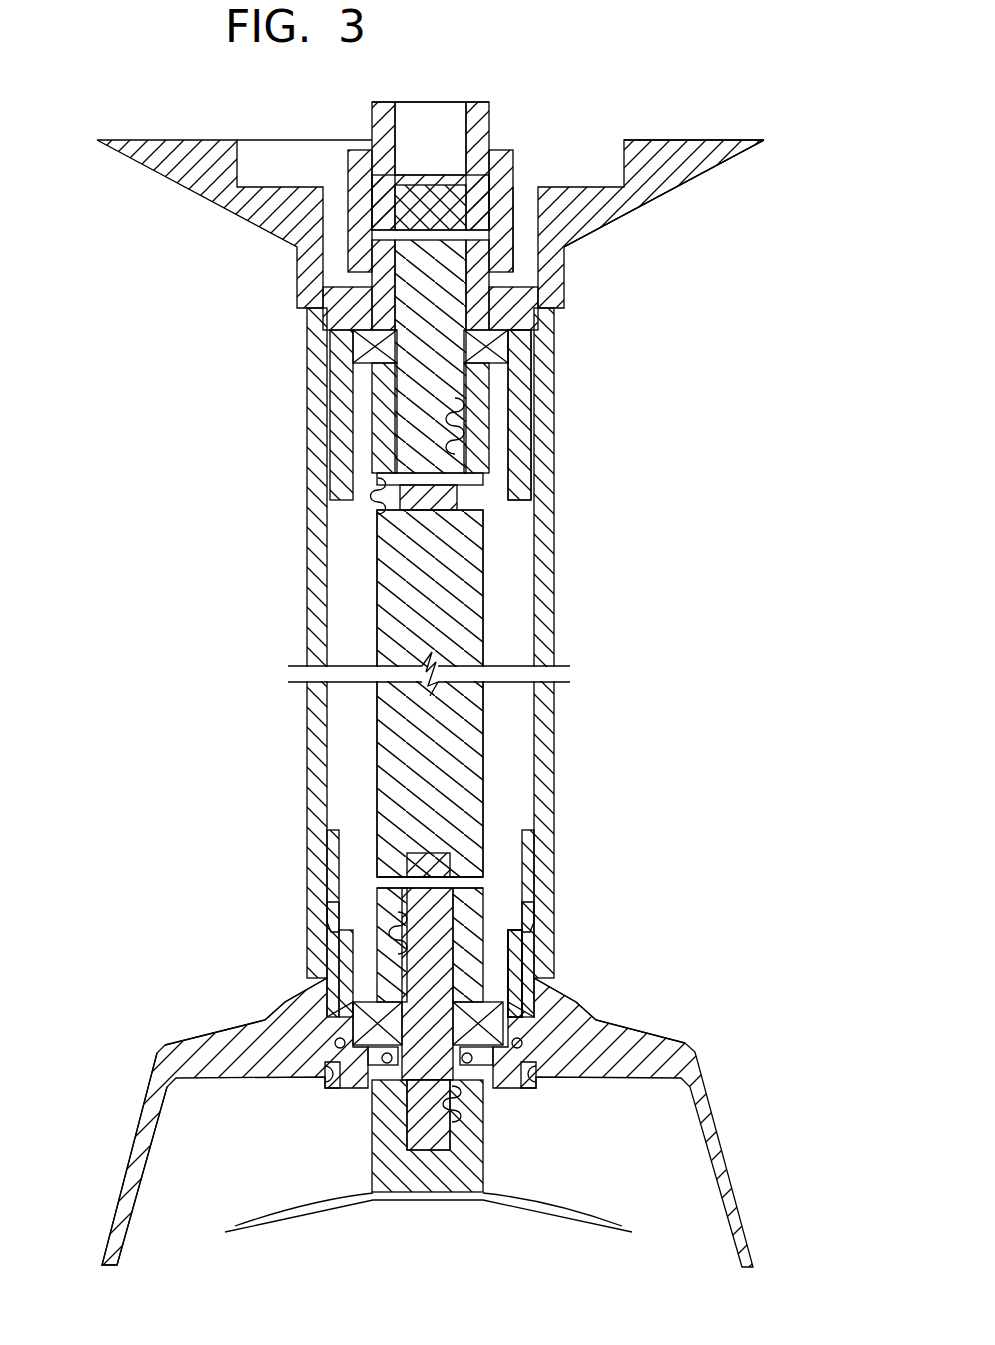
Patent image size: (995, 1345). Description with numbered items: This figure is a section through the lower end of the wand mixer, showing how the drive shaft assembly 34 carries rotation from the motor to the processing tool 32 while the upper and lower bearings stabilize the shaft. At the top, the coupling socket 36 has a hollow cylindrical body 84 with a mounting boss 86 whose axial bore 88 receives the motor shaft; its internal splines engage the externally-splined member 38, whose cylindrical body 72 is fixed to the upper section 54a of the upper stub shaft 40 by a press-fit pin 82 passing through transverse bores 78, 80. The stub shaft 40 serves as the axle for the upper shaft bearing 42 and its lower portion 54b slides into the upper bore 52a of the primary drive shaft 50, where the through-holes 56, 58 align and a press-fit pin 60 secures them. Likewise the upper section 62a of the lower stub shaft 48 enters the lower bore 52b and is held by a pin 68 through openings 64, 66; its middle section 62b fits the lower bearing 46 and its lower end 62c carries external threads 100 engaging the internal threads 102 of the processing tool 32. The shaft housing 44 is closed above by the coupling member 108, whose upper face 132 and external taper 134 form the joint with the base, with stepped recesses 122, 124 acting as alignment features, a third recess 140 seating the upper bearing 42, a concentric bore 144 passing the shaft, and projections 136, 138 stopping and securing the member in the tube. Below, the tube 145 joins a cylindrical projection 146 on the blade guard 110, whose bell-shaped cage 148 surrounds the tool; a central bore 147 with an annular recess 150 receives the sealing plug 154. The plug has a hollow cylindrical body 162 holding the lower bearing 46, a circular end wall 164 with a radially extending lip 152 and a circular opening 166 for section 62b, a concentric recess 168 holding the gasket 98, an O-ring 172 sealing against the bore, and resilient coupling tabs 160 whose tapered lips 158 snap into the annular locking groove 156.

The processing tool 32 is at (316, 1215).
The drive shaft assembly 34 is at (486, 582).
The coupling socket 36 is at (511, 147).
The externally-splined member 38 is at (350, 305).
The upper stub shaft 40 is at (384, 398).
The upper shaft bearing 42 is at (511, 347).
The shaft housing 44 is at (306, 735).
The lower bearing 46 is at (371, 972).
The lower stub shaft 48 is at (400, 955).
The primary drive shaft 50 is at (463, 615).
The upper bore 52a is at (470, 412).
The lower bore 52b is at (398, 935).
The upper section of stub shaft 54a is at (375, 346).
The lower portion of upper stub shaft 54b is at (408, 430).
The transverse through-hole 56 is at (383, 482).
The through-hole 58 is at (377, 507).
The press-fit pin 60 is at (470, 490).
The upper section of lower stub shaft 62a is at (333, 915).
The middle section of lower stub shaft 62b is at (530, 928).
The lower end of lower stub shaft 62c is at (376, 1160).
The opening 64 is at (447, 865).
The opening 66 is at (507, 880).
The pin 68 is at (388, 880).
The cylindrical body 72 is at (358, 268).
The transverse bore 78 is at (378, 178).
The transverse bore 80 is at (500, 250).
The press-fit pin 82 is at (412, 232).
The hollow cylindrical body 84 is at (496, 236).
The mounting boss 86 is at (372, 120).
The axial bore 88 is at (440, 125).
The gasket 98 is at (365, 1070).
The external threads 100 is at (485, 1176).
The internal threads 102 is at (440, 1130).
The coupling member 108 is at (621, 216).
The blade guard 110 is at (154, 1050).
The first stepped recess 122 is at (256, 162).
The second stepped recess 124 is at (293, 250).
The upper face 132 is at (690, 140).
The external taper 134 is at (668, 190).
The upper projection 136 is at (552, 272).
The lower projection 138 is at (515, 395).
The third stepped recess 140 is at (500, 304).
The concentric bore 144 is at (515, 440).
The tube 145 is at (554, 725).
The cylindrical projection 146 is at (333, 852).
The central bore 147 is at (530, 900).
The cage 148 is at (147, 1120).
The annular recess 150 is at (336, 1090).
The radially extending lip 152 is at (540, 1070).
The sealing plug 154 is at (530, 1088).
The annular locking groove 156 is at (527, 920).
The tapered lip 158 is at (528, 935).
The resilient coupling tabs 160 is at (525, 950).
The hollow cylindrical body 162 is at (350, 1018).
The circular end wall 164 is at (375, 1100).
The circular opening 166 is at (455, 1105).
The concentric recess 168 is at (440, 1082).
The O-ring 172 is at (560, 1030).